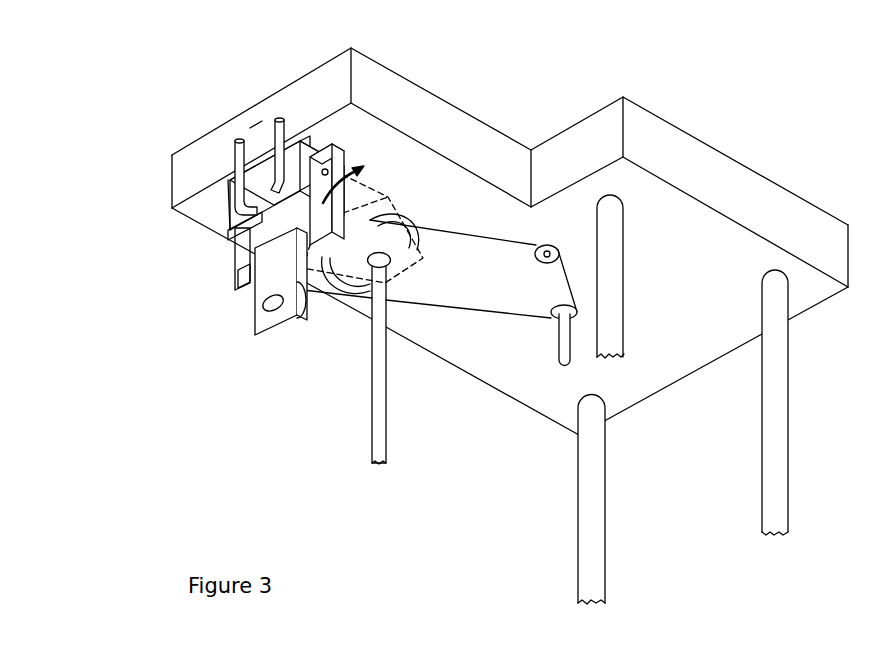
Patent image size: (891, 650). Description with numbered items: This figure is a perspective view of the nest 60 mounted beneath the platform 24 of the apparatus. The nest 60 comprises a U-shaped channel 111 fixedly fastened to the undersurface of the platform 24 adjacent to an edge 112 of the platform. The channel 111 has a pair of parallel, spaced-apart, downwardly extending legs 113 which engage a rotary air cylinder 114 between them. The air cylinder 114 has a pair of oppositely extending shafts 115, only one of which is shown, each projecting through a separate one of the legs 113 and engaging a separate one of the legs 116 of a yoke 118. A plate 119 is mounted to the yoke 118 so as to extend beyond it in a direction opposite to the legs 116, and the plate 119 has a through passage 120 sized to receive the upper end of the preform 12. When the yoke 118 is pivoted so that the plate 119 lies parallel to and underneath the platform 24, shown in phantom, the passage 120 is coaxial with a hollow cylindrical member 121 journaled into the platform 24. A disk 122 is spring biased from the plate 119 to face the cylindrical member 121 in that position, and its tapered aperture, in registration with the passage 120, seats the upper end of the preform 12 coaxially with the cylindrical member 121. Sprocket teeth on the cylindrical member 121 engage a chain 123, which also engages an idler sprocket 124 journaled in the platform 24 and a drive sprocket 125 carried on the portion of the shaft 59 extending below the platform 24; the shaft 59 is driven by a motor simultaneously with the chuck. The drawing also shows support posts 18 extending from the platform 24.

The preform 12 is at (385, 417).
The support posts 18 is at (617, 263).
The platform 24 is at (733, 173).
The shaft 59 is at (565, 338).
The nest 60 is at (135, 241).
The U-shaped channel 111 is at (305, 137).
The edge 112 is at (258, 123).
The legs 113 is at (328, 145).
The rotary air cylinder 114 is at (238, 235).
The shaft 115 is at (327, 172).
The legs 116 is at (327, 212).
The yoke 118 is at (250, 278).
The plate 119 is at (272, 285).
The through passage 120 is at (267, 303).
The hollow cylindrical member 121 is at (418, 235).
The disk 122 is at (308, 303).
The chain 123 is at (462, 305).
The idler sprocket 124 is at (547, 257).
The drive sprocket 125 is at (572, 317).